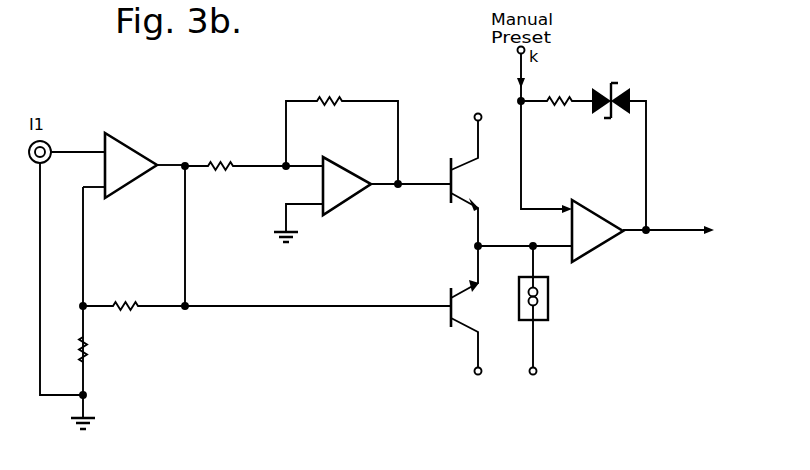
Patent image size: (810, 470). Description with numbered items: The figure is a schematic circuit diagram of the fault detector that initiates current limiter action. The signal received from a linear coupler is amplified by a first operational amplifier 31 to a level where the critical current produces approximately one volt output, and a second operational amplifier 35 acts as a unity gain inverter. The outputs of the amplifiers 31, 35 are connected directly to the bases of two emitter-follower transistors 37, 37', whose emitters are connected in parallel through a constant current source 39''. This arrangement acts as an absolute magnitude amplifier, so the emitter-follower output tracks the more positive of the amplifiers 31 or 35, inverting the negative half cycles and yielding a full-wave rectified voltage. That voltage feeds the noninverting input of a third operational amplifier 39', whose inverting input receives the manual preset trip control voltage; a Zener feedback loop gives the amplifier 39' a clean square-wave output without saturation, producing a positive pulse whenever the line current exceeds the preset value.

The first operational amplifier 31 is at (131, 175).
The second operational amplifier 35 is at (344, 194).
The emitter-follower transistor 37 is at (456, 181).
The emitter-follower transistor 37' is at (459, 310).
The third operational amplifier 39' is at (581, 243).
The constant current source 39'' is at (562, 310).